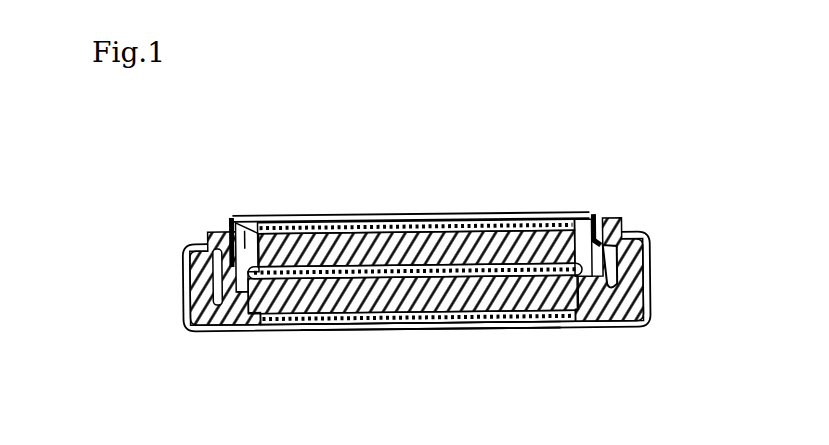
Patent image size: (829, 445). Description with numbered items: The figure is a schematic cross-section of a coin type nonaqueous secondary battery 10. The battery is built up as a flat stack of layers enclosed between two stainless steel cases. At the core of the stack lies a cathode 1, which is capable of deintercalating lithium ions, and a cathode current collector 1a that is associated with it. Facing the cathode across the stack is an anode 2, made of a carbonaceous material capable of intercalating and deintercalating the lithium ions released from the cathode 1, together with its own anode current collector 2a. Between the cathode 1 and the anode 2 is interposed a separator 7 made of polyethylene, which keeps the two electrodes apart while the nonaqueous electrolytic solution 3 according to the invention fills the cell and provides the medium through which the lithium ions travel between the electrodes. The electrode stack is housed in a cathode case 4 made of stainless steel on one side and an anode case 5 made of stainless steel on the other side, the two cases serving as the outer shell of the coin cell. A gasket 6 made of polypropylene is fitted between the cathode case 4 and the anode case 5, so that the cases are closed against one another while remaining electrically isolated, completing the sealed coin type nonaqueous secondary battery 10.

The cathode 1 is at (365, 326).
The cathode current collector 1a is at (297, 327).
The anode 2 is at (455, 221).
The anode current collector 2a is at (354, 222).
The nonaqueous electrolytic solution 3 is at (238, 216).
The cathode case 4 is at (472, 327).
The anode case 5 is at (556, 211).
The gasket 6 is at (201, 334).
The separator 7 is at (516, 278).
The coin type nonaqueous secondary battery 10 is at (488, 192).